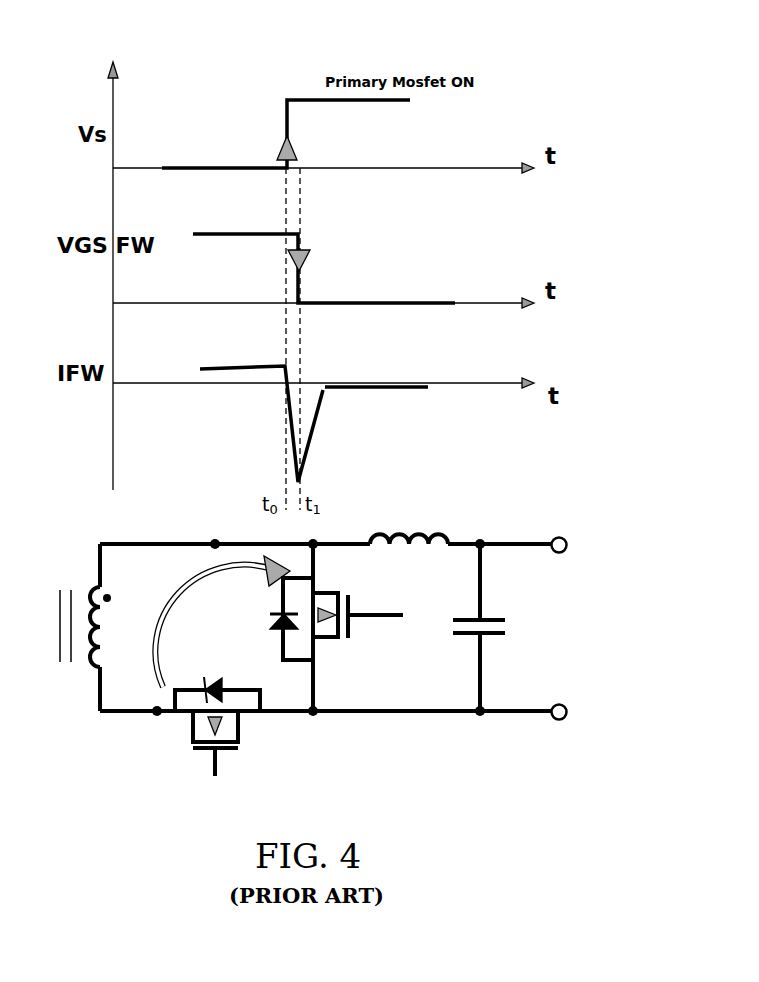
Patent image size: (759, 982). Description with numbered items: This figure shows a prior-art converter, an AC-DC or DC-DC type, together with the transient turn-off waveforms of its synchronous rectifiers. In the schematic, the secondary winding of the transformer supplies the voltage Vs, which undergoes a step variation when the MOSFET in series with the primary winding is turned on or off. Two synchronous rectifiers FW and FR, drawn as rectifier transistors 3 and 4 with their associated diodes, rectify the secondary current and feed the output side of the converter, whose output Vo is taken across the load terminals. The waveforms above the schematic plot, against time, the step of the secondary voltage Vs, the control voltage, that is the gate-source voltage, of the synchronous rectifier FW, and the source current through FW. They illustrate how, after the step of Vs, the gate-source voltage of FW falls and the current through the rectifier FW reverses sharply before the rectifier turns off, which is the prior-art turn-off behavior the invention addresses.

The forward rectifier MOSFET 3 is at (222, 743).
The freewheeling MOSFET 4 is at (358, 627).
The synchronous rectifier FW is at (297, 611).
The synchronous rectifier FR is at (217, 683).
The voltage at the secondary winding Vs is at (117, 680).
The output voltage Vo is at (559, 580).